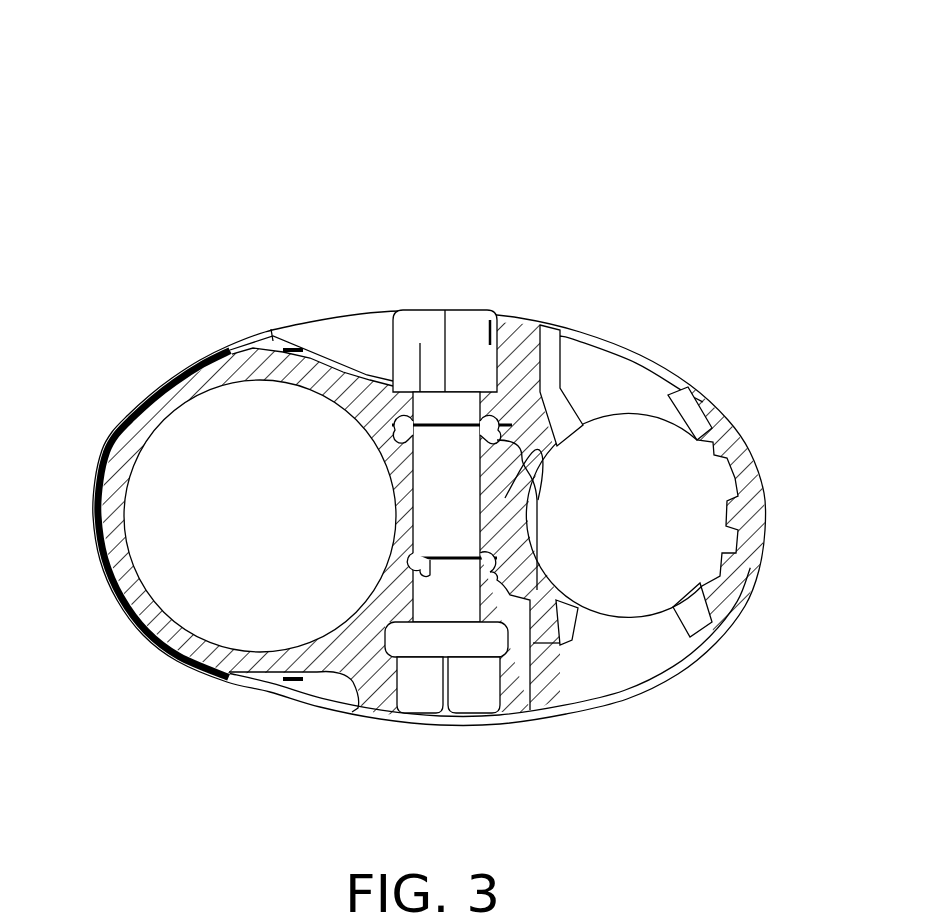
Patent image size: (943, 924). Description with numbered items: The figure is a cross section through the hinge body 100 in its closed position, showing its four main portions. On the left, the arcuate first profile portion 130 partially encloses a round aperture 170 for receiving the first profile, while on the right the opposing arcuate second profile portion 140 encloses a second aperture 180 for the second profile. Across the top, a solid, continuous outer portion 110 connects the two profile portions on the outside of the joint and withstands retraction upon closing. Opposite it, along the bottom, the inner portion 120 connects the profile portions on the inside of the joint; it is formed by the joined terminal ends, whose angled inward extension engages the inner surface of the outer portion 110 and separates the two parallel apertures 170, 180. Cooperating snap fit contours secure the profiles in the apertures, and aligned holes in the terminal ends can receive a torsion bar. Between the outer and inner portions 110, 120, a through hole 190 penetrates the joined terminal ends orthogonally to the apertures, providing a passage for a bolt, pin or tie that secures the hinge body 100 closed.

The hinge body 100 is at (278, 295).
The outer portion 110 is at (437, 302).
The inner portion 120 is at (403, 723).
The first profile portion 130 is at (108, 425).
The second profile portion 140 is at (750, 440).
The through hole 190 is at (462, 468).
The aperture 170 is at (285, 497).
The aperture 180 is at (653, 495).